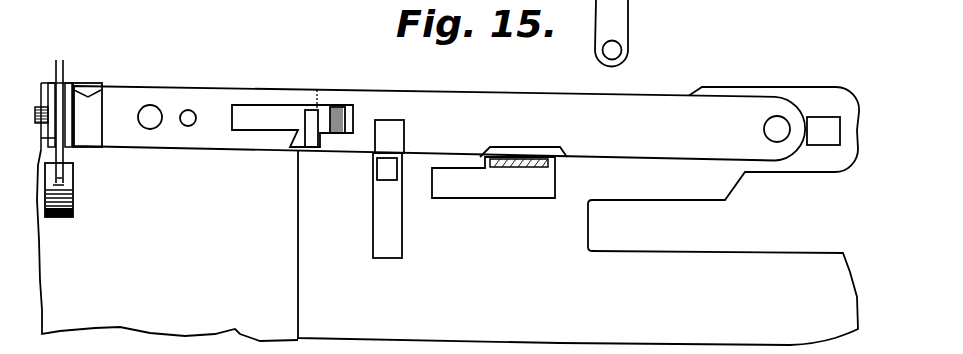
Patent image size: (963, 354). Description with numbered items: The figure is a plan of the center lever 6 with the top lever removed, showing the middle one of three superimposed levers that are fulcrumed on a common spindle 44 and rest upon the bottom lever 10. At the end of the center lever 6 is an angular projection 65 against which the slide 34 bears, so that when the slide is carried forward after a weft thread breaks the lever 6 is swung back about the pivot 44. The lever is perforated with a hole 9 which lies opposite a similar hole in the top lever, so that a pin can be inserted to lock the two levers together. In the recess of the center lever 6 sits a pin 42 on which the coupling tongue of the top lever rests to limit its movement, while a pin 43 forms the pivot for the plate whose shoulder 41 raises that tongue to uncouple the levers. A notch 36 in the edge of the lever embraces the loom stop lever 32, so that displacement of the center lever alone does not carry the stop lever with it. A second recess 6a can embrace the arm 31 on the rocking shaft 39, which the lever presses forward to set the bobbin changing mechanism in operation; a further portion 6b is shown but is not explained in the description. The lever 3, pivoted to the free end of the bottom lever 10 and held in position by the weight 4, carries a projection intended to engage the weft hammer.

The lever 3 is at (64, 70).
The weight 4 is at (72, 198).
The center lever 6 is at (206, 149).
The notch or recess 6a is at (396, 132).
The slot in slide bar 6b is at (270, 118).
The hole 9 is at (146, 120).
The bottom lever 10 is at (52, 140).
The arm 31 is at (385, 163).
The loom stop lever 32 is at (520, 164).
The slide 34 is at (690, 260).
The notch or recess 36 is at (527, 147).
The rocking shaft 39 is at (613, 50).
The angular projection 41 is at (316, 108).
The pin 42 is at (347, 112).
The pin 43 is at (196, 113).
The common spindle 44 is at (771, 123).
The angular projection 65 is at (100, 93).